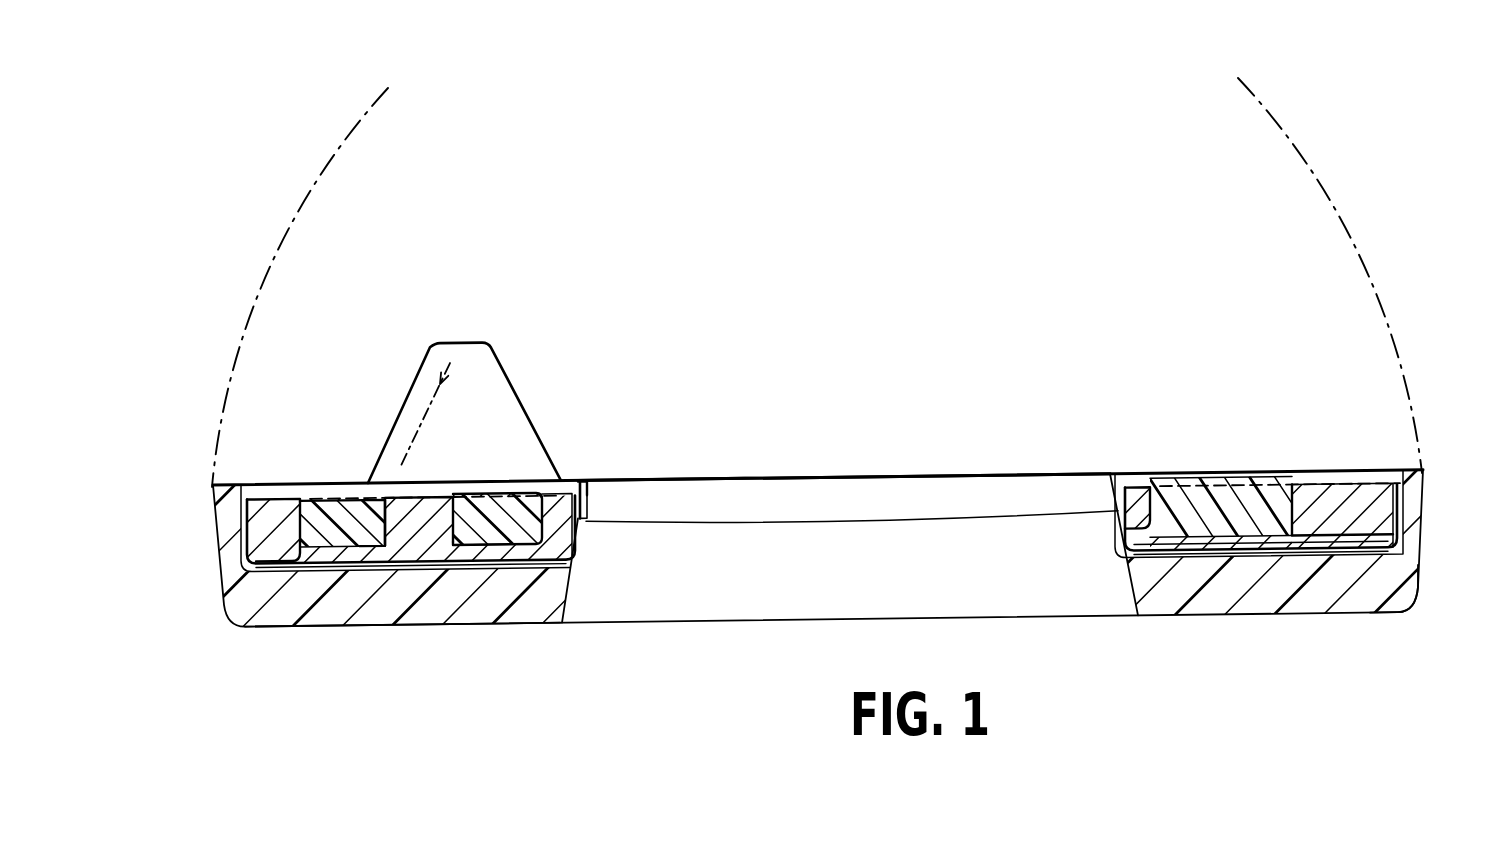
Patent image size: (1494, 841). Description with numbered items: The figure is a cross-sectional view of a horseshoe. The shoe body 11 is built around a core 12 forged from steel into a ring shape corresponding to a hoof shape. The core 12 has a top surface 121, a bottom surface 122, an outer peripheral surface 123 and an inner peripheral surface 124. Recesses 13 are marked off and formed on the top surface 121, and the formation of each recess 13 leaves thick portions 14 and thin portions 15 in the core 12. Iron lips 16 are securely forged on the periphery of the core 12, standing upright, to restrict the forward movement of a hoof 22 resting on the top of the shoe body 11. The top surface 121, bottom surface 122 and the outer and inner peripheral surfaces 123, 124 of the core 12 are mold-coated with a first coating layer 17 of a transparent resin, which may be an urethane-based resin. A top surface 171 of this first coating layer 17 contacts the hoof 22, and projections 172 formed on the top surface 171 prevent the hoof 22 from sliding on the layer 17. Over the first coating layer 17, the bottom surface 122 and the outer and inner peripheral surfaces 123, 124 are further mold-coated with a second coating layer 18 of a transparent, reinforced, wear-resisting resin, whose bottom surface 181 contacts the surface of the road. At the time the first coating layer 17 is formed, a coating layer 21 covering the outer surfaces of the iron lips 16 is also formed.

The shoe body 11 is at (1437, 486).
The core 12 is at (505, 578).
The top surface 121 is at (575, 484).
The bottom surface 122 is at (387, 600).
The outer peripheral surface 123 is at (255, 548).
The inner peripheral surface 124 is at (590, 495).
The recess 13 is at (310, 486).
The thick portion 14 is at (272, 486).
The thin portion 15 is at (330, 600).
The iron lip 16 is at (464, 380).
The first coating layer 17 is at (432, 488).
The top surface of first coating layer 171 is at (527, 483).
The projection 172 is at (973, 478).
The second coating layer 18 is at (274, 615).
The bottom surface of second coating layer 181 is at (1380, 612).
The coating layer 21 is at (462, 343).
The hoof 22 is at (1320, 158).